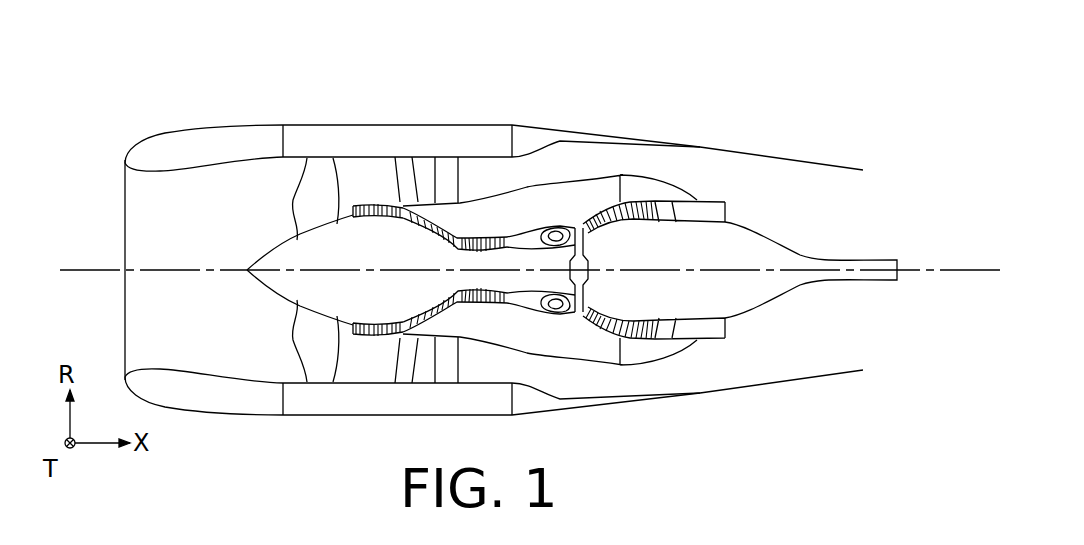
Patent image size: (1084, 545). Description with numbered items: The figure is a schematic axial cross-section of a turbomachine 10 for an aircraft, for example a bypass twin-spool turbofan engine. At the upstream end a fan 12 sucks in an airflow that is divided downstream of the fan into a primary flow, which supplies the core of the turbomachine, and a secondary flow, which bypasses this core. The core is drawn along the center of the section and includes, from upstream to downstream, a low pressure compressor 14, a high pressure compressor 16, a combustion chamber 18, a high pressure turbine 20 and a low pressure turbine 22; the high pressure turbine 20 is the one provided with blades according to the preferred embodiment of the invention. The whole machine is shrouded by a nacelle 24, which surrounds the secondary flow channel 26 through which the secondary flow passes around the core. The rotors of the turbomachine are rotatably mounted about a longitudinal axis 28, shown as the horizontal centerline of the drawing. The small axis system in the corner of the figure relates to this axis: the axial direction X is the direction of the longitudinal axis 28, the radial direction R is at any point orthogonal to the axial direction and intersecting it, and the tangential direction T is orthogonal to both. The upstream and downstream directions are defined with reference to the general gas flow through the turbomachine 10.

The turbomachine 10 is at (290, 88).
The fan 12 is at (307, 335).
The low pressure compressor 14 is at (377, 206).
The high pressure compressor 16 is at (493, 240).
The combustion chamber 18 is at (552, 227).
The high pressure turbine 20 is at (579, 221).
The low pressure turbine 22 is at (650, 199).
The nacelle 24 is at (407, 133).
The secondary flow channel 26 is at (552, 372).
The longitudinal axis 28 is at (68, 270).